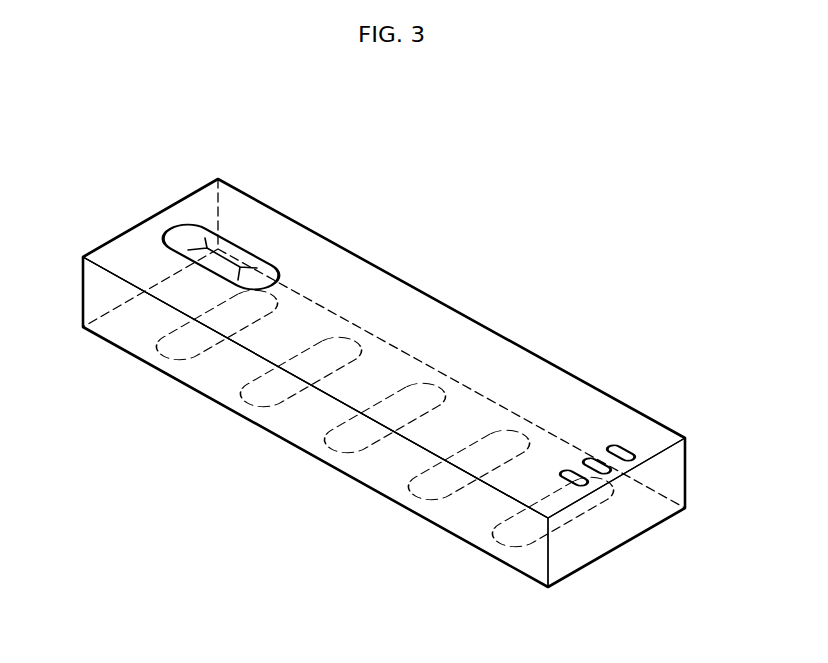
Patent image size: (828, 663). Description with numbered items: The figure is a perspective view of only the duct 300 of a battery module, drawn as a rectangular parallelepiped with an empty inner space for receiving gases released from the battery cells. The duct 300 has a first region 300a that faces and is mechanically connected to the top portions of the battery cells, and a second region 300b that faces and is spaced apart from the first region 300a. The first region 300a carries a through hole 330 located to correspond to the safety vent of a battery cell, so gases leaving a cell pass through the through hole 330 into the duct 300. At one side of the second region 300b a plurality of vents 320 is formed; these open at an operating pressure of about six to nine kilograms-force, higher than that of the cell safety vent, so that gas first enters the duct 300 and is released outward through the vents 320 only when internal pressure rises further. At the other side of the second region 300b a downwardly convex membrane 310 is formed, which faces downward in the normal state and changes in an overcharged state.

The duct 300 is at (155, 232).
The first region 300a is at (400, 503).
The second region 300b is at (448, 338).
The membrane 310 is at (241, 249).
The vents 320 is at (619, 450).
The through hole 330 is at (328, 445).